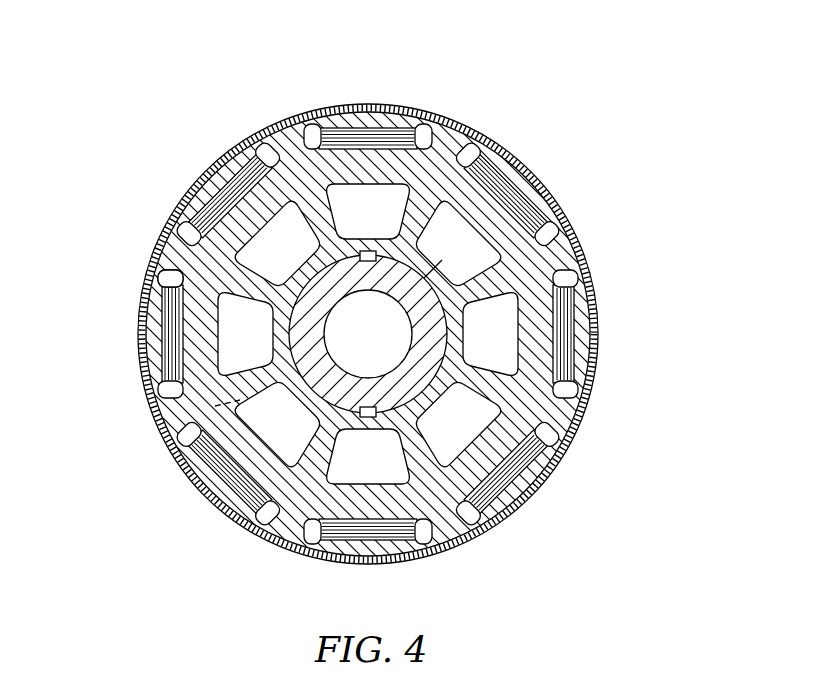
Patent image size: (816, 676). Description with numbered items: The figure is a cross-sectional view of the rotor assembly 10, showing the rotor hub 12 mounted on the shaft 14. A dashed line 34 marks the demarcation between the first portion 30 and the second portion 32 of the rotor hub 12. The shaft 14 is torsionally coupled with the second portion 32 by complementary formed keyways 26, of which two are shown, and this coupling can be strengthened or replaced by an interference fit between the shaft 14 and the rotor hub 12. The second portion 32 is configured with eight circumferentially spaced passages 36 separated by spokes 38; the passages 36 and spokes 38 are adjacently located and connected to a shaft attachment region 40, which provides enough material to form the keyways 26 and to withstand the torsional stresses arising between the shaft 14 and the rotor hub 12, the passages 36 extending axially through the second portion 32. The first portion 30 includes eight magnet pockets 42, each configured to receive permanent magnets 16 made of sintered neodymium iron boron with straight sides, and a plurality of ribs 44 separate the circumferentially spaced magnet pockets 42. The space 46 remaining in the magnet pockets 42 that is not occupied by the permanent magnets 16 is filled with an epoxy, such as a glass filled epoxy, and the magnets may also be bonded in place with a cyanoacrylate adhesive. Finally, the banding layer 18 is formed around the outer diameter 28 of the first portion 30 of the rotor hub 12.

The rotor assembly 10 is at (367, 313).
The rotor hub 12 is at (517, 263).
The shaft 14 is at (335, 403).
The permanent magnets 16 is at (563, 307).
The banding layer 18 is at (538, 230).
The keyways 26 is at (300, 472).
The outer diameter 28 is at (540, 483).
The first portion 30 is at (437, 500).
The second portion 32 is at (455, 378).
The dashed line 34 is at (215, 406).
The passages 36 is at (455, 228).
The spokes 38 is at (415, 212).
The shaft attachment region 40 is at (433, 265).
The magnet pockets 42 is at (265, 148).
The ribs 44 is at (180, 253).
The space 46 is at (163, 278).